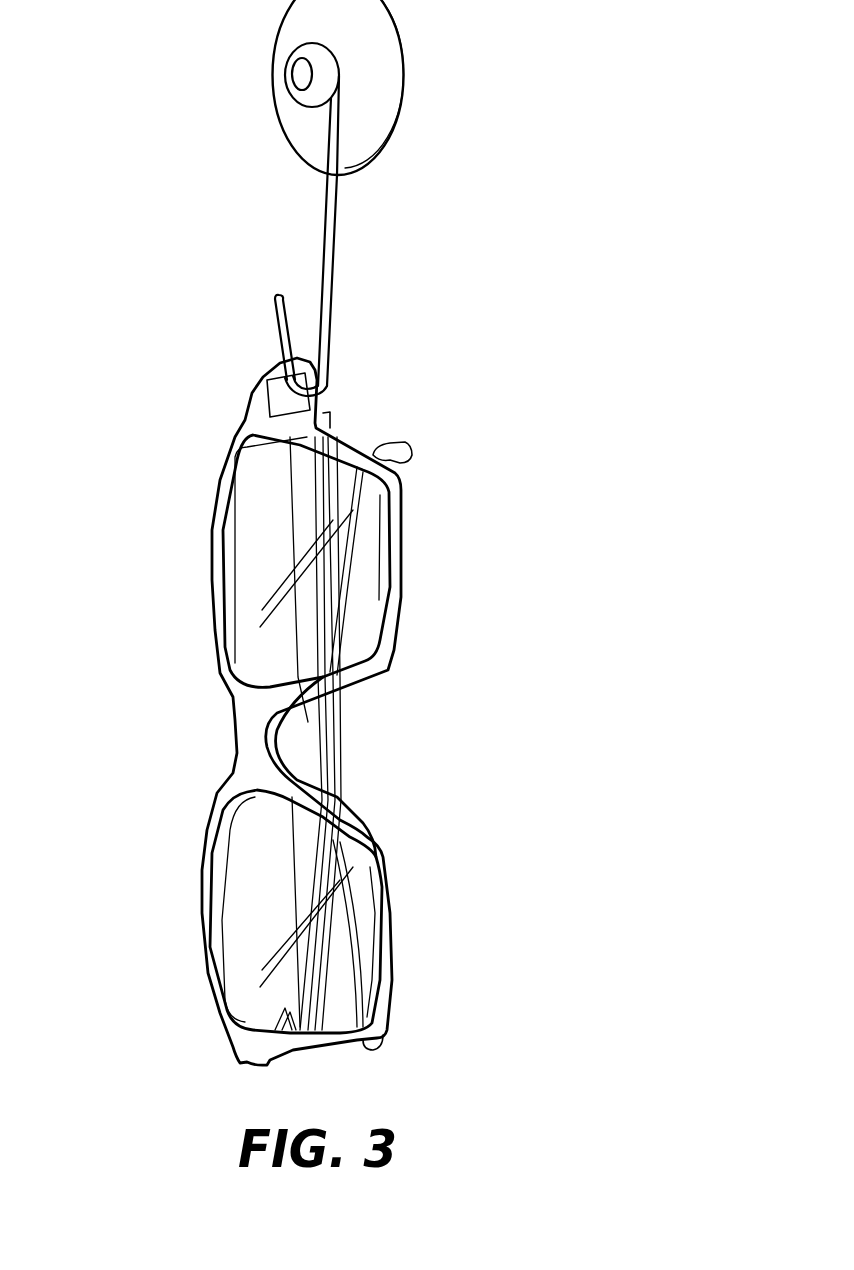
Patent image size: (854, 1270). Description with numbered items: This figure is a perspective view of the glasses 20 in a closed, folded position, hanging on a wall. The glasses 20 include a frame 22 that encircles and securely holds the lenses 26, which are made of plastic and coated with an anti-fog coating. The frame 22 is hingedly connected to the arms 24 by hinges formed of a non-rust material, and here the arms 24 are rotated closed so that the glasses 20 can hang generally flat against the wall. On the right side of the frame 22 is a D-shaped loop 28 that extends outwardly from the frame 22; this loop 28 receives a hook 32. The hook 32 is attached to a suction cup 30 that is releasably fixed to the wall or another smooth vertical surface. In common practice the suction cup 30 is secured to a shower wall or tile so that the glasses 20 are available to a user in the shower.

The glasses 20 is at (140, 735).
The frame 22 is at (343, 810).
The arms 24 is at (337, 722).
The lenses 26 is at (363, 582).
The D-shaped loop 28 is at (318, 398).
The suction cup 30 is at (380, 78).
The hook 32 is at (328, 245).